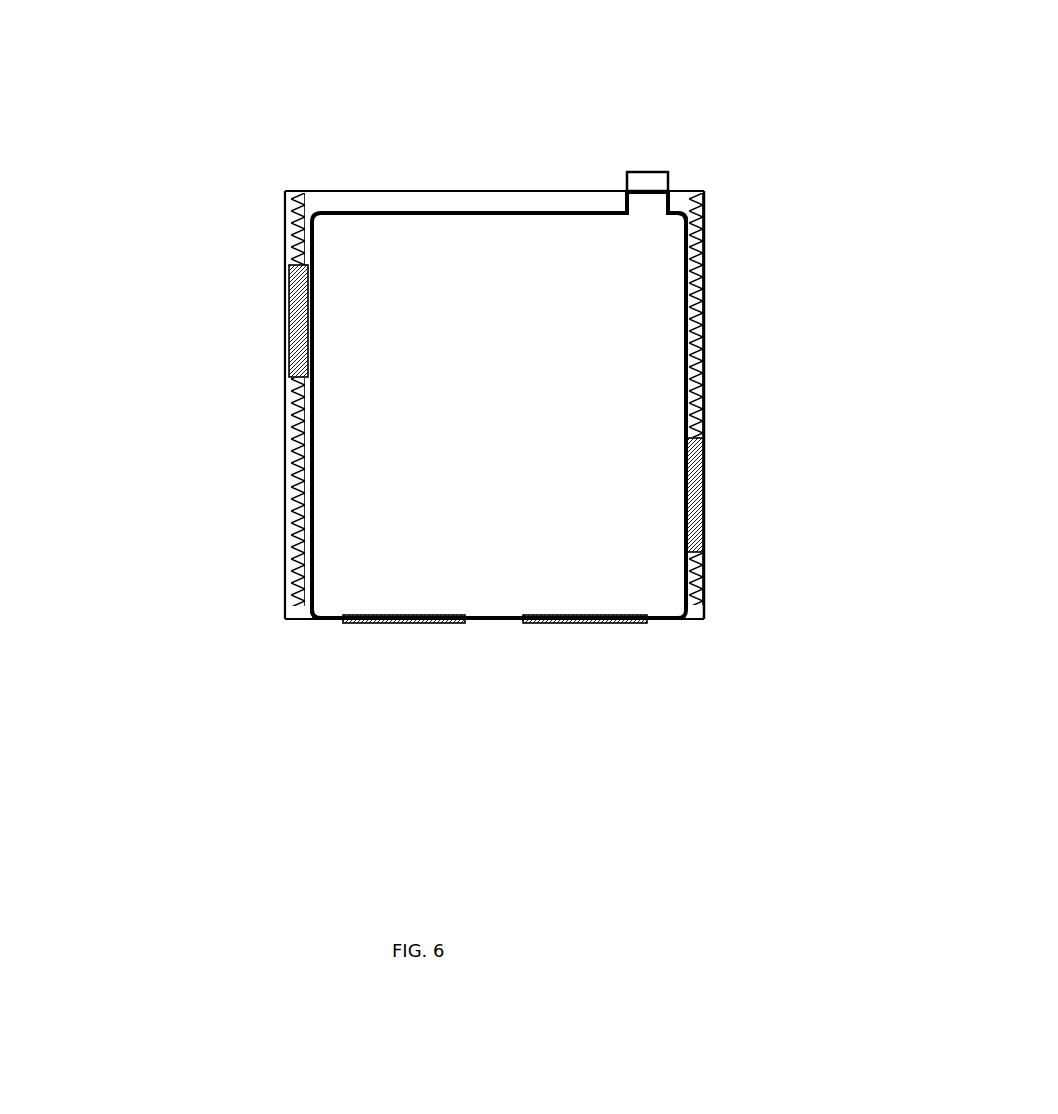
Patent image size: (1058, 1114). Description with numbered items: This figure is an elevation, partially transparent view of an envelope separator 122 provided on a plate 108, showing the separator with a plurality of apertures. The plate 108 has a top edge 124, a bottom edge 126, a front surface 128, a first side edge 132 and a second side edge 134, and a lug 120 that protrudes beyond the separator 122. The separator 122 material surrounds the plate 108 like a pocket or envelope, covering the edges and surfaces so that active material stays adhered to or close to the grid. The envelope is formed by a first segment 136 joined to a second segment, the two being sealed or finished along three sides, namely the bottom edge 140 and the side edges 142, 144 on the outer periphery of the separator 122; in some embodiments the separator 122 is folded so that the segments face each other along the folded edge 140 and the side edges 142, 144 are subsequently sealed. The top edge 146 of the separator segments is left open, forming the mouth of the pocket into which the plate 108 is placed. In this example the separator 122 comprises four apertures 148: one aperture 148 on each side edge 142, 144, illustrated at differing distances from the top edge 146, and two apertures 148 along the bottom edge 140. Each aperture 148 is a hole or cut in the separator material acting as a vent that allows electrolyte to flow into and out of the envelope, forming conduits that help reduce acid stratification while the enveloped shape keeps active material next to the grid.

The positive plate 108 is at (705, 257).
The lug 120 is at (648, 172).
The separator 122 is at (593, 207).
The top edge 124 is at (456, 212).
The bottom edge 126 is at (487, 622).
The front surface 128 is at (363, 480).
The first side edge 132 is at (297, 468).
The second side edge 134 is at (705, 417).
The first segment 136 is at (500, 519).
The bottom edge 140 is at (308, 623).
The side edge 142 is at (283, 398).
The side edge 144 is at (707, 348).
The top edge 146 is at (330, 192).
The aperture 148 is at (293, 312).